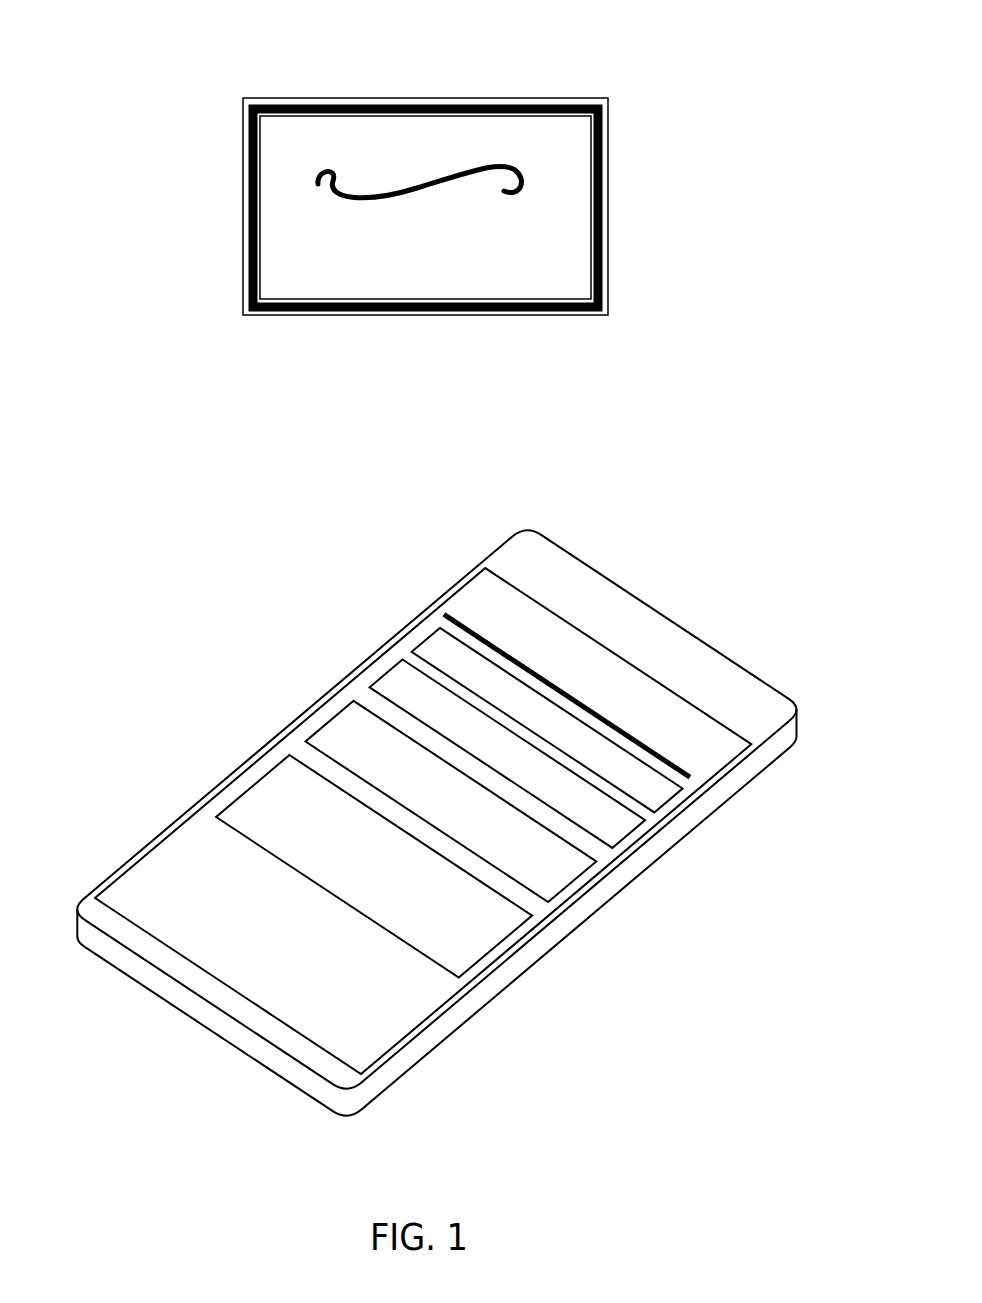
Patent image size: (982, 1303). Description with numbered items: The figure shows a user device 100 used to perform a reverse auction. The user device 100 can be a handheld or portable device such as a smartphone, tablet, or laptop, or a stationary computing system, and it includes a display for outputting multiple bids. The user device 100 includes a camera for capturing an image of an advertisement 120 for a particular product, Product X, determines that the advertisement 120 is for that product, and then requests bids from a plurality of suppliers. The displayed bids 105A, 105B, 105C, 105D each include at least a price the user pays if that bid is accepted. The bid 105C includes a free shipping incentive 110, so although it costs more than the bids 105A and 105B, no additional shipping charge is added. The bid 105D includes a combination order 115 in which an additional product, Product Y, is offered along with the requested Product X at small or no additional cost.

The user device 100 is at (436, 812).
The bid 105A is at (438, 630).
The bid 105B is at (385, 680).
The bid 105C is at (491, 810).
The bid 105D is at (395, 888).
The incentive 110 is at (550, 888).
The combination order 115 is at (470, 958).
The advertisement 120 is at (318, 98).